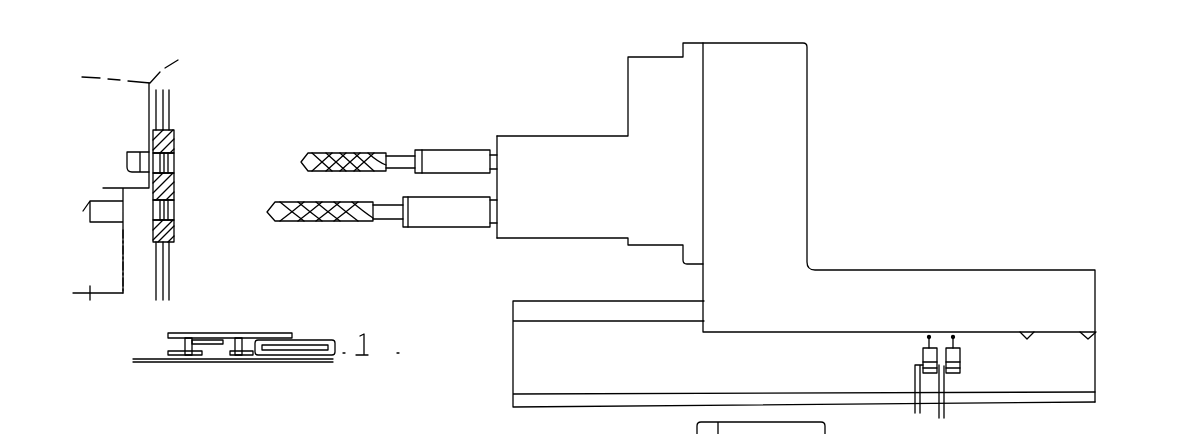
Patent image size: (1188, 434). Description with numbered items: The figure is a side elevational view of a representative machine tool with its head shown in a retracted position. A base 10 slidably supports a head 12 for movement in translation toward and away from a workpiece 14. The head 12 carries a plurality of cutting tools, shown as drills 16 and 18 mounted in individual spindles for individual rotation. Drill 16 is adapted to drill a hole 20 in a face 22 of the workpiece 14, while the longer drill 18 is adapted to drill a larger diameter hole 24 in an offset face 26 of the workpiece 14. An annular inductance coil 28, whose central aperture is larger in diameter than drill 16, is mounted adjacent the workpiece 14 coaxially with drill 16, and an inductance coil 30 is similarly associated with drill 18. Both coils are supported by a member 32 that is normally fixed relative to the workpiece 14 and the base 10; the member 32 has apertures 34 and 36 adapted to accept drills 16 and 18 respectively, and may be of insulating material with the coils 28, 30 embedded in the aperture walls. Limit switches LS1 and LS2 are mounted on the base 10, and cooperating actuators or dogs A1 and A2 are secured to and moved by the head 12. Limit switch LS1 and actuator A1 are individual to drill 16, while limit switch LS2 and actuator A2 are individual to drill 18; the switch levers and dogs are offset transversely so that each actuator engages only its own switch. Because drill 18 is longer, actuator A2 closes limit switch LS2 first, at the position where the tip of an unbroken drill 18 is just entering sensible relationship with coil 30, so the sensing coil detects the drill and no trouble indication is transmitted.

The base 10 is at (522, 367).
The head 12 is at (812, 118).
The workpiece 14 is at (90, 300).
The drill 16 is at (378, 158).
The drill 18 is at (372, 214).
The hole 20 is at (133, 150).
The face 22 is at (130, 172).
The larger diameter hole 24 is at (108, 182).
The offset face 26 is at (123, 250).
The inductance coil 28 is at (175, 160).
The inductance coil 30 is at (175, 214).
The member 32 is at (175, 190).
The aperture 34 is at (175, 168).
The aperture 36 is at (175, 218).
The actuator A1 is at (1096, 334).
The actuator A2 is at (1027, 339).
The limit switch LS1 is at (960, 357).
The limit switch LS2 is at (923, 355).